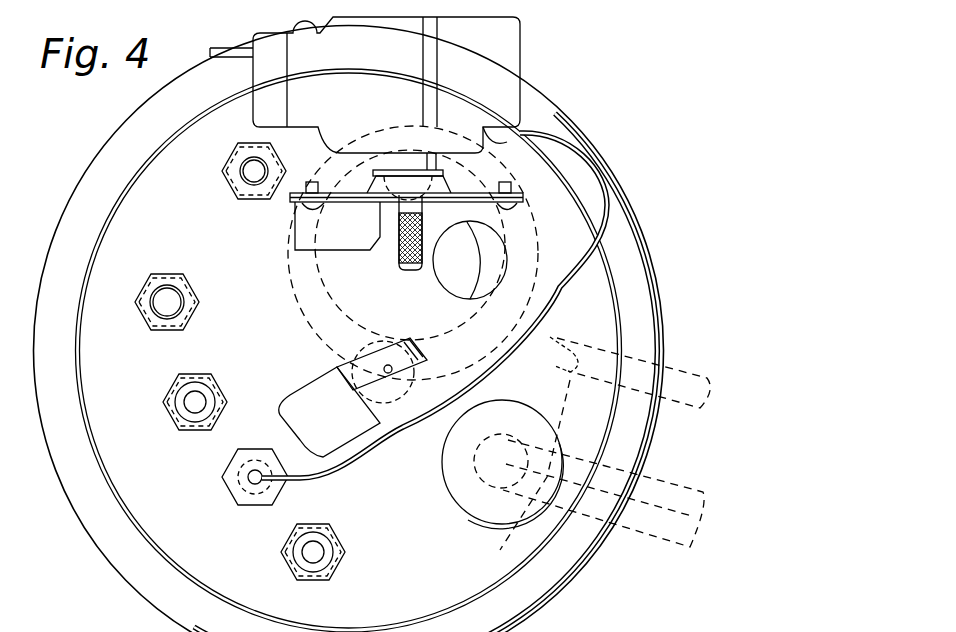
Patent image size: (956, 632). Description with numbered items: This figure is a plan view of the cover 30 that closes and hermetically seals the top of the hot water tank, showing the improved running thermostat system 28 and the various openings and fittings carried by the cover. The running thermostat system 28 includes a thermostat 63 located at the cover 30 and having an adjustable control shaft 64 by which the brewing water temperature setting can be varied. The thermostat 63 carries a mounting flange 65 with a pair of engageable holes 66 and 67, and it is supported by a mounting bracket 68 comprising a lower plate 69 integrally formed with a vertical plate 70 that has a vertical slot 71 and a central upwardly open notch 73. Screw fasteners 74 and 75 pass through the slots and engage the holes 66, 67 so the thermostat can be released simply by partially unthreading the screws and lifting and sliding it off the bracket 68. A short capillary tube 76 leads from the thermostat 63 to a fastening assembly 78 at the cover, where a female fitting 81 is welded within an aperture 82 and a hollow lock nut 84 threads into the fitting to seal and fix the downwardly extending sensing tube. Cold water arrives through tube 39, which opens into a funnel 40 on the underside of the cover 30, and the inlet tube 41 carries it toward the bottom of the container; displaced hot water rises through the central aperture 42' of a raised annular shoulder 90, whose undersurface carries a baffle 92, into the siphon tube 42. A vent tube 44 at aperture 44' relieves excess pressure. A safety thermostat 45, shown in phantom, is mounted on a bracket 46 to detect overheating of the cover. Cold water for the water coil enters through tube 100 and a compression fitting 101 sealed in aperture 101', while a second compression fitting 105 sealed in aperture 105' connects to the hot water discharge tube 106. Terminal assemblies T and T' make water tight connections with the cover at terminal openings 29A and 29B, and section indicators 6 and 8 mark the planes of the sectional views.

The running thermostat system 28 is at (527, 62).
The thermostat 63 is at (368, 82).
The cover 30 is at (162, 234).
The tube 100 is at (244, 179).
The compression fitting 101 is at (257, 213).
The aperture 101' is at (193, 164).
The second compression fitting 105 is at (151, 307).
The aperture 105' is at (121, 282).
The hot water discharge tube 106 is at (180, 298).
The terminal opening 29A is at (318, 588).
The terminal opening 29B is at (162, 394).
The terminal assembly T is at (345, 518).
The terminal assembly T' is at (227, 361).
The mounting flange 65 is at (345, 188).
The engageable hole 66 is at (332, 190).
The engageable hole 67 is at (510, 190).
The vertical slot 71 is at (303, 206).
The screw fastener 74 is at (307, 209).
The lower plate 69 is at (298, 246).
The mounting bracket 68 is at (347, 208).
The central upwardly open notch 73 is at (387, 206).
The adjustable control shaft 64 is at (400, 255).
The vertical plate 70 is at (466, 204).
The screw fastener 75 is at (518, 208).
The tube 39 is at (437, 273).
The funnel 40 is at (293, 317).
The inlet tube 41 is at (355, 293).
The safety thermostat 45 is at (340, 366).
The bracket 46 is at (320, 386).
The vent tube 44 is at (605, 444).
The aperture 44' is at (548, 357).
The siphon tube 42 is at (616, 493).
The central aperture 42' is at (663, 506).
The capillary tube 76 is at (558, 293).
The female fitting 81 is at (262, 437).
The aperture 82 is at (226, 487).
The lock nut 84 is at (240, 461).
The fastening assembly 78 is at (290, 495).
The raised annular shoulder 90 is at (590, 558).
The baffle 92 is at (535, 605).
The section line 6- 6 is at (180, 530).
The section line 8- 8 is at (345, 380).